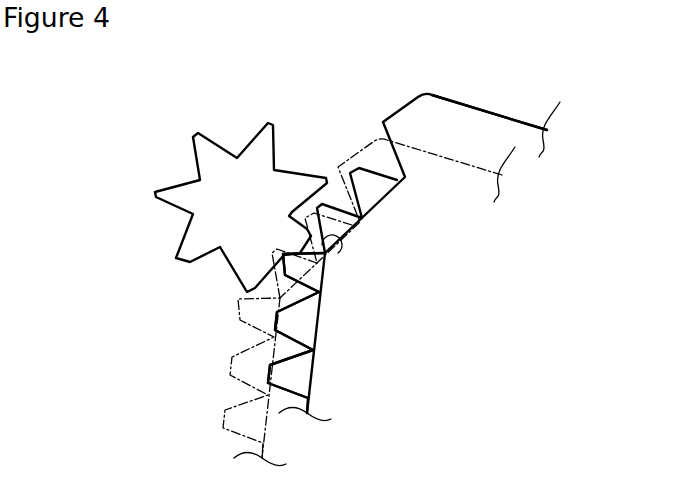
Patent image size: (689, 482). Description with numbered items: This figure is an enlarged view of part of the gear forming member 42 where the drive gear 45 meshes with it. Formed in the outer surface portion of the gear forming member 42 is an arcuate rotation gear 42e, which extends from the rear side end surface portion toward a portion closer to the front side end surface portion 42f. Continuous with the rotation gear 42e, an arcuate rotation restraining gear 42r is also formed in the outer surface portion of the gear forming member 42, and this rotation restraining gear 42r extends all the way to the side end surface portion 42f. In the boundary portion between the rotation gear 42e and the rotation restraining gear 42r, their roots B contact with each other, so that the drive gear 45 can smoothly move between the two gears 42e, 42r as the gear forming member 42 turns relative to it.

The gear forming member 42 is at (422, 280).
The side end surface portion 42f is at (503, 115).
The rotation restraining gear 42r is at (337, 148).
The rotation gear 42e is at (262, 344).
The drive gear 45 is at (245, 192).
The roots B is at (338, 253).